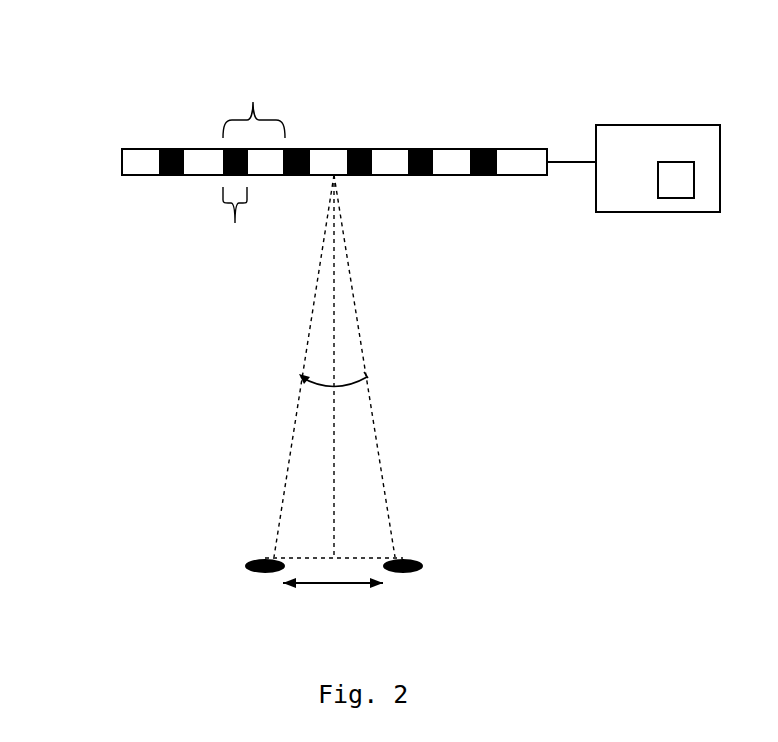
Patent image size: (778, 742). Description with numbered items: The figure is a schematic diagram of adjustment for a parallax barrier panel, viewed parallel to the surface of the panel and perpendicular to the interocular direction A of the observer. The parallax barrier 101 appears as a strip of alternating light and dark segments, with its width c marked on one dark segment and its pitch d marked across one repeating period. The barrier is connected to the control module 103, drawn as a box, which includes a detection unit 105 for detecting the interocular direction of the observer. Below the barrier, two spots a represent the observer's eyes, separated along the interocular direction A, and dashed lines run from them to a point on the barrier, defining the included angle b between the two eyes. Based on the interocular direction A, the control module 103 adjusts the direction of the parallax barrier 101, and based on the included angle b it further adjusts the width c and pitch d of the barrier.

The parallax barrier 101 is at (163, 149).
The control module 103 is at (685, 137).
The detection unit 105 is at (677, 187).
The pitch d is at (254, 95).
The width c is at (235, 226).
The included angle b is at (353, 385).
The light spots / measurement points a is at (337, 566).
The interocular direction A is at (333, 607).